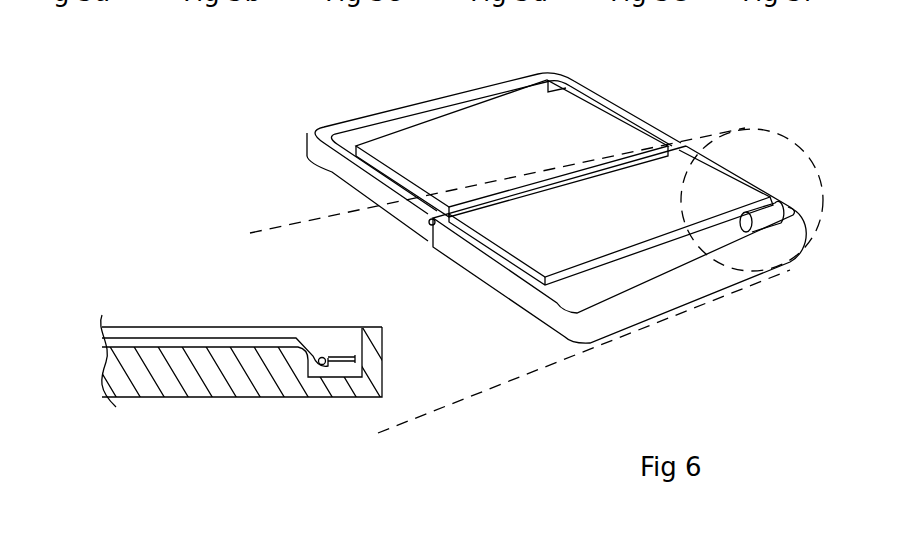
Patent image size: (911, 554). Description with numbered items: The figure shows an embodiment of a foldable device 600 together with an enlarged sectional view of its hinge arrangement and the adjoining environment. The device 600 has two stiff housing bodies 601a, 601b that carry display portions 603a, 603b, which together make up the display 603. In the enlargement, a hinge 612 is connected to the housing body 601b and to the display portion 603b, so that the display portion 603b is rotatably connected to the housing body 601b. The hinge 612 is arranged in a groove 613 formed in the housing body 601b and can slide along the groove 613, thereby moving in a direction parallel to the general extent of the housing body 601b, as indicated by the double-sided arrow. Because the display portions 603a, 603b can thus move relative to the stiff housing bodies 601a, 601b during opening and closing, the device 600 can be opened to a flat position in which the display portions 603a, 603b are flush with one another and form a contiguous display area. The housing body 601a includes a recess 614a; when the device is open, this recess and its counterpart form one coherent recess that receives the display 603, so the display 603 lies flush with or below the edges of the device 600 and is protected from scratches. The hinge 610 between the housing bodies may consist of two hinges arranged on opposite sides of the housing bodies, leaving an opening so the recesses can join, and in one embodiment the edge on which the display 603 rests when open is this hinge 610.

The device 600 is at (285, 132).
The housing body 601a is at (435, 95).
The housing body 601b is at (645, 300).
The display 603 is at (196, 327).
The display portion 603a is at (585, 115).
The display portion 603b is at (637, 175).
The hinge 610 is at (432, 222).
The hinge 612 is at (796, 214).
The groove 613 is at (367, 397).
The recess 614a is at (380, 128).